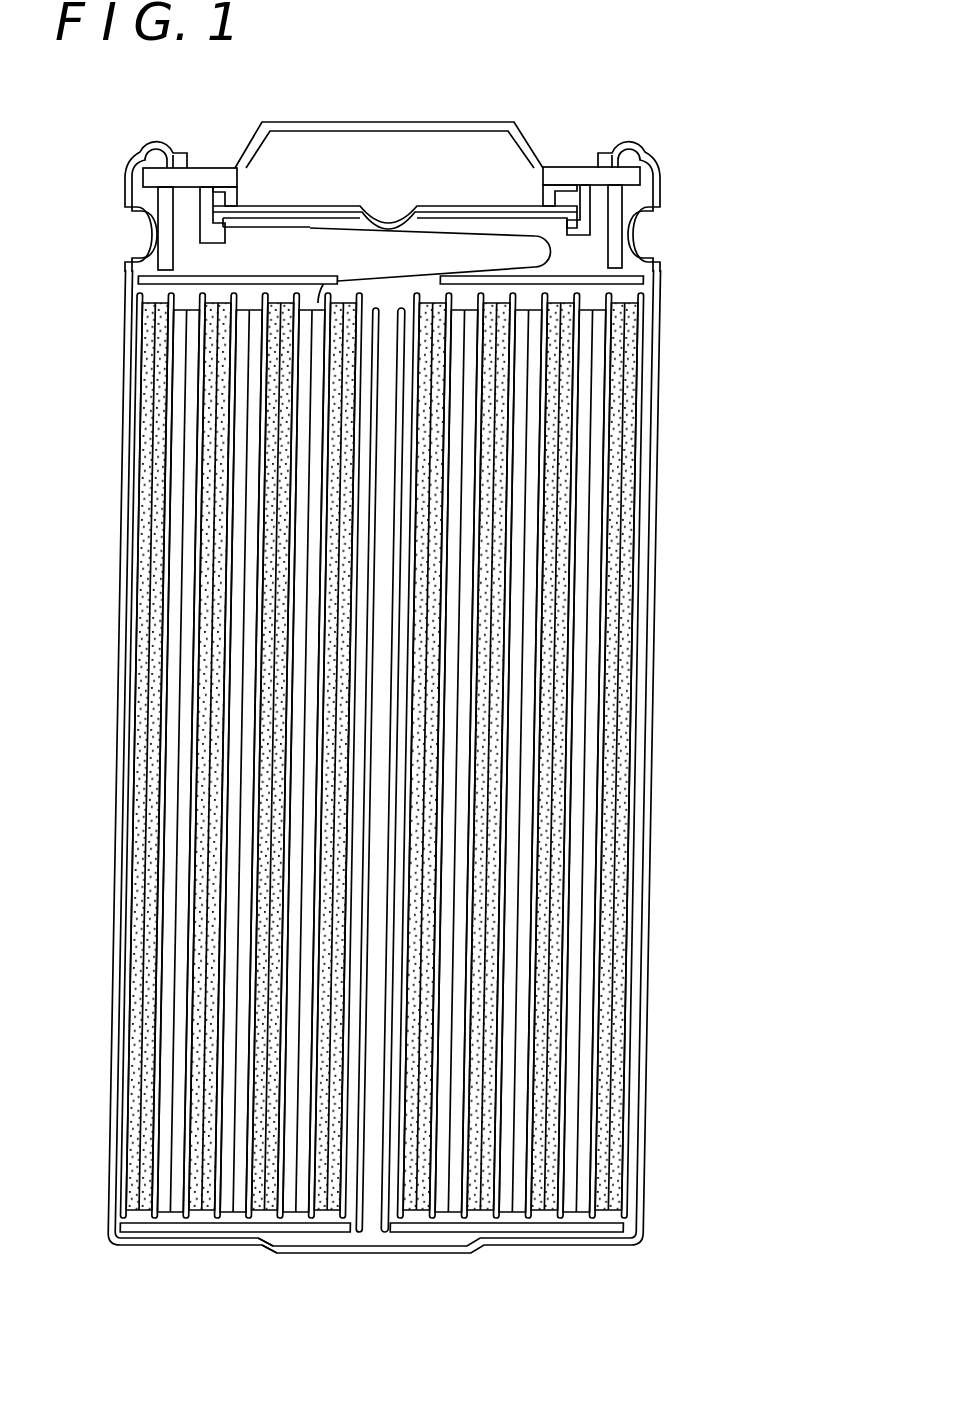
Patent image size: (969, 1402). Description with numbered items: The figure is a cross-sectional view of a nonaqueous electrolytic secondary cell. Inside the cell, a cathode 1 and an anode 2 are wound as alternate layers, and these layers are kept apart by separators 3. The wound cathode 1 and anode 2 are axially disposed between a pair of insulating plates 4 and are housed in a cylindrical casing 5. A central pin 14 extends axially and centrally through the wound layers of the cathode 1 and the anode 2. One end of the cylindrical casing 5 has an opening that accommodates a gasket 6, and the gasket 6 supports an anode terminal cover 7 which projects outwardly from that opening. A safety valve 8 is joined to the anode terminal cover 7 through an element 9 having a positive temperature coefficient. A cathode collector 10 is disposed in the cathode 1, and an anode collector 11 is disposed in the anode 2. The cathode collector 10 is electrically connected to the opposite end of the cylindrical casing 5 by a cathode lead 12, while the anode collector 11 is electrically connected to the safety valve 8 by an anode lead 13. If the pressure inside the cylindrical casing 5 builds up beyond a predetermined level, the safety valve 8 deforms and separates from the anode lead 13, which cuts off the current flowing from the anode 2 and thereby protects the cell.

The cathode 1 is at (632, 328).
The anode 2 is at (634, 391).
The separators 3 is at (612, 488).
The insulating plates 4 is at (628, 276).
The cylindrical casing 5 is at (657, 527).
The gasket 6 is at (640, 163).
The anode terminal cover 7 is at (386, 121).
The safety valve 8 is at (432, 210).
The element of a positive temperature coefficient 9 is at (150, 178).
The cathode collector 10 is at (628, 606).
The anode collector 11 is at (592, 690).
The cathode lead 12 is at (263, 1248).
The anode lead 13 is at (560, 252).
The central pin 14 is at (383, 1232).